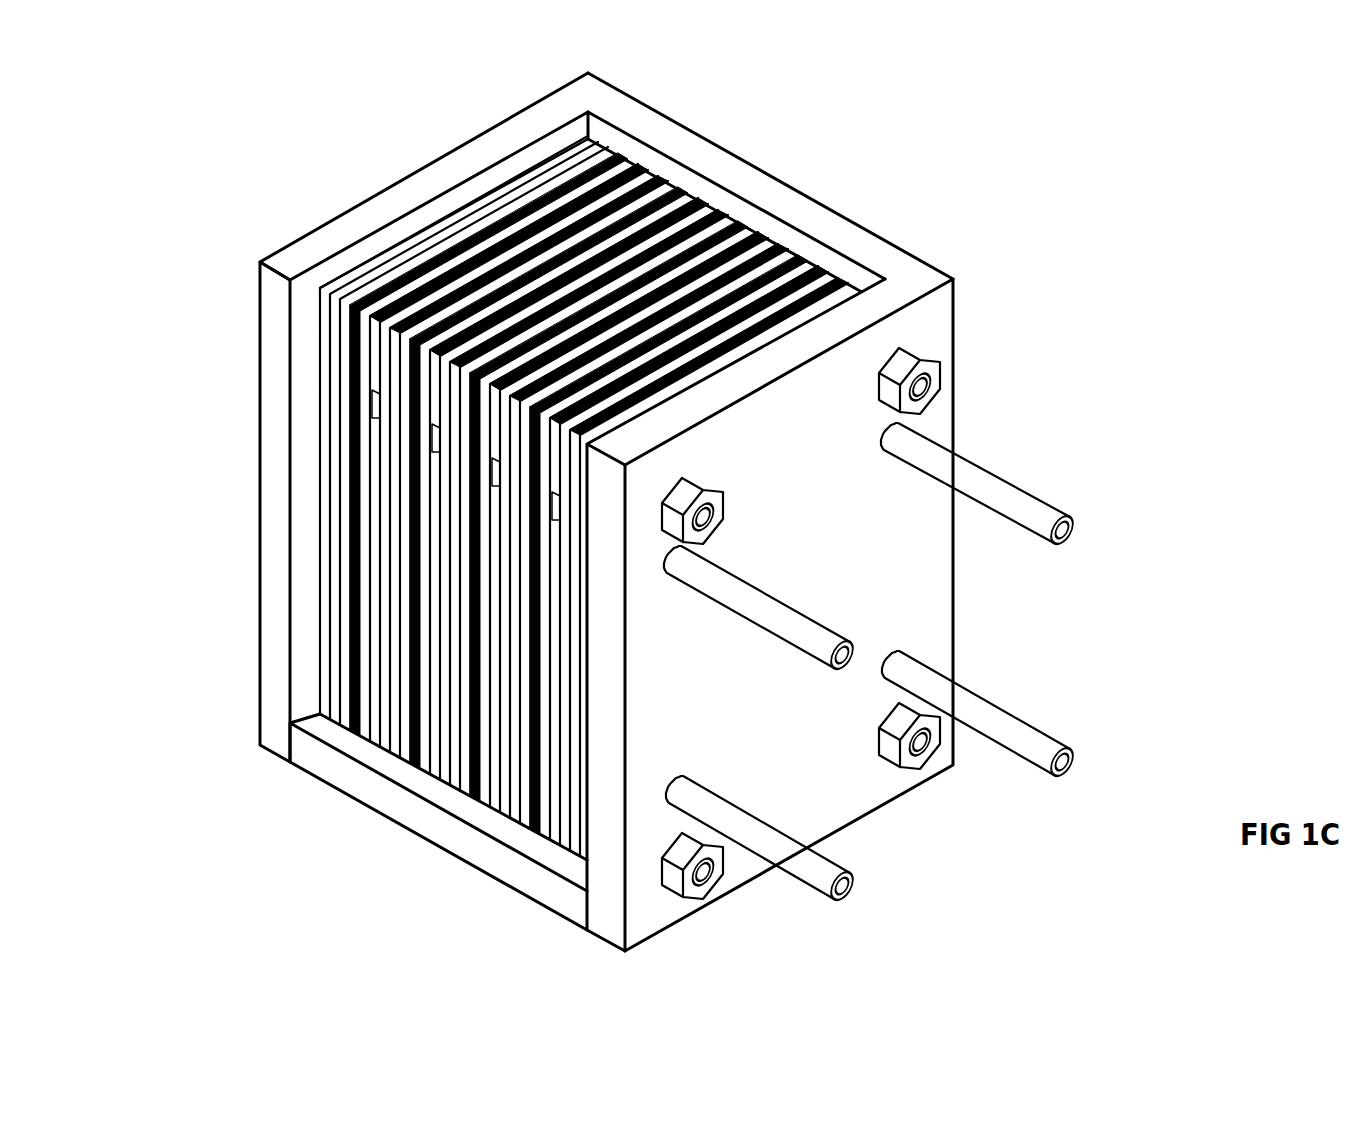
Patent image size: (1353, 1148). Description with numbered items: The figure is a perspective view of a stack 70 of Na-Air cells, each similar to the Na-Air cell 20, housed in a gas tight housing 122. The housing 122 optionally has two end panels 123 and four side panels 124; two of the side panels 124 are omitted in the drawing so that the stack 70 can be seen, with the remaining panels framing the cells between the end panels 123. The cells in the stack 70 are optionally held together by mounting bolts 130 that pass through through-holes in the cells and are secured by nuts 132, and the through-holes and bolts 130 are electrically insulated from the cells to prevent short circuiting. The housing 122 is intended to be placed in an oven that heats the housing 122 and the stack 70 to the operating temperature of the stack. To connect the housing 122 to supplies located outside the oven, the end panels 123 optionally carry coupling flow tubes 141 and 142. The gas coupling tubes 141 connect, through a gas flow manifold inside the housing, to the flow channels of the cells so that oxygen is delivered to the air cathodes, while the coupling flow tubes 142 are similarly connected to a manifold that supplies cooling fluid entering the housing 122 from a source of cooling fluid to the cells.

The gas tight housing 122 is at (258, 235).
The end panels 123 is at (592, 85).
The side panels 124 is at (760, 184).
The stack 70 is at (300, 505).
The Na-Air cell 20 is at (407, 752).
The mounting bolts 130 is at (925, 387).
The nuts 132 is at (910, 366).
The coupling flow tubes 141 is at (803, 625).
The coupling flow tubes 142 is at (1012, 748).